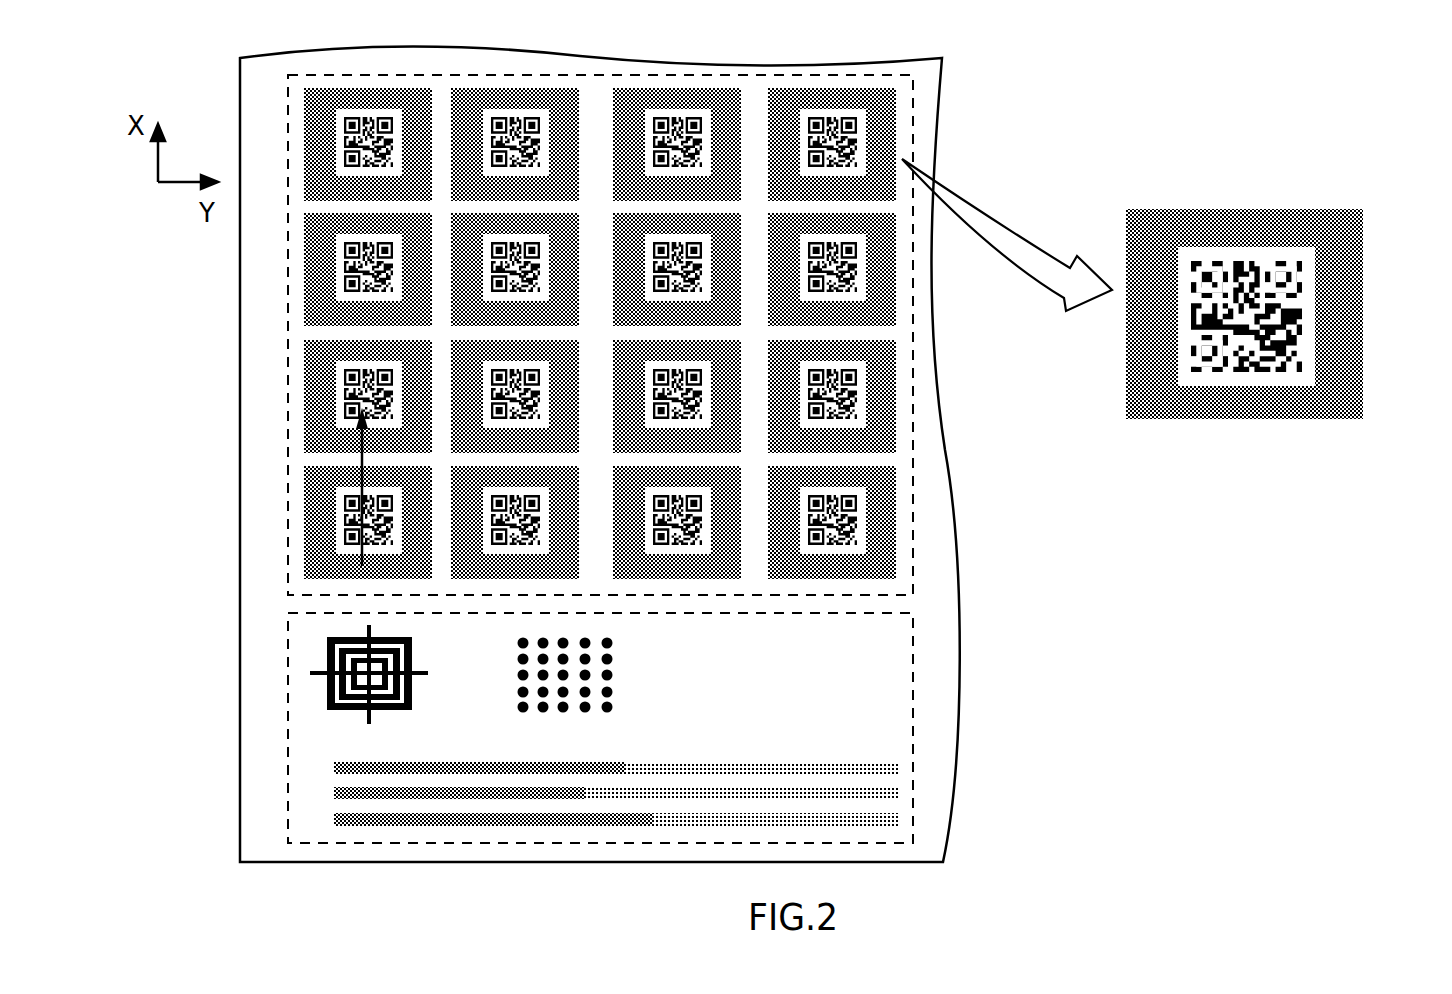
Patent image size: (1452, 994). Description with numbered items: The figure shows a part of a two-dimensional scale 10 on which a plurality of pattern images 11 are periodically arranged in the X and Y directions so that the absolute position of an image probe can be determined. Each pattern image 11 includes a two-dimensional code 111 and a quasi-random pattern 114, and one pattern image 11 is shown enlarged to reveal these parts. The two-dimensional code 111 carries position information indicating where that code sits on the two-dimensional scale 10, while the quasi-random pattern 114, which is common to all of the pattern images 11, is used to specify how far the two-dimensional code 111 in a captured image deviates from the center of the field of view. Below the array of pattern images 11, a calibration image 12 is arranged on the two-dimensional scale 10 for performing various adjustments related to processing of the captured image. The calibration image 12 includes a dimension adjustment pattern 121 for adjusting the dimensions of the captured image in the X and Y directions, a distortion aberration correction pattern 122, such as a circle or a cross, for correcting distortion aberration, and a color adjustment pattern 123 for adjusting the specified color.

The two-dimensional scale 10 is at (161, 41).
The pattern image 11 is at (877, 333).
The two-dimensional code 111 is at (1303, 282).
The quasi-random pattern 114 is at (1323, 209).
The calibration image 12 is at (663, 728).
The dimension adjustment pattern 121 is at (412, 656).
The distortion aberration correction pattern 122 is at (608, 658).
The color adjustment pattern 123 is at (770, 762).